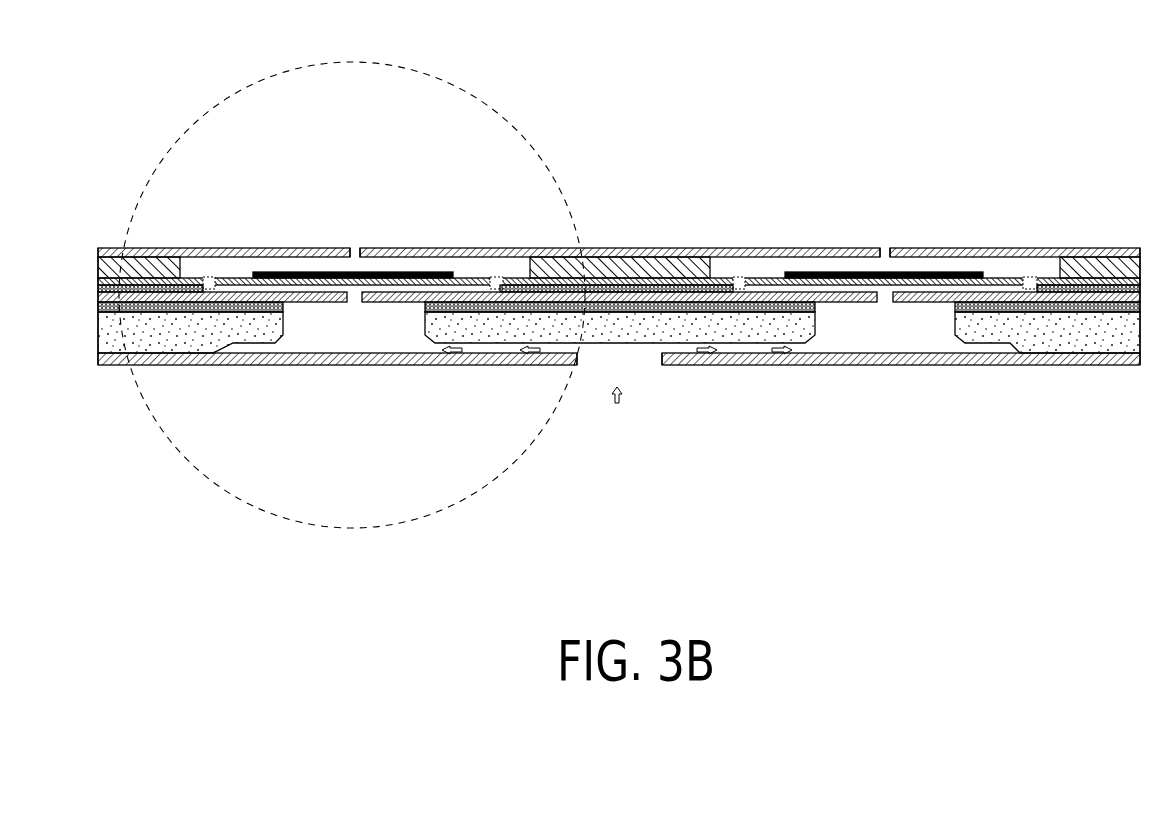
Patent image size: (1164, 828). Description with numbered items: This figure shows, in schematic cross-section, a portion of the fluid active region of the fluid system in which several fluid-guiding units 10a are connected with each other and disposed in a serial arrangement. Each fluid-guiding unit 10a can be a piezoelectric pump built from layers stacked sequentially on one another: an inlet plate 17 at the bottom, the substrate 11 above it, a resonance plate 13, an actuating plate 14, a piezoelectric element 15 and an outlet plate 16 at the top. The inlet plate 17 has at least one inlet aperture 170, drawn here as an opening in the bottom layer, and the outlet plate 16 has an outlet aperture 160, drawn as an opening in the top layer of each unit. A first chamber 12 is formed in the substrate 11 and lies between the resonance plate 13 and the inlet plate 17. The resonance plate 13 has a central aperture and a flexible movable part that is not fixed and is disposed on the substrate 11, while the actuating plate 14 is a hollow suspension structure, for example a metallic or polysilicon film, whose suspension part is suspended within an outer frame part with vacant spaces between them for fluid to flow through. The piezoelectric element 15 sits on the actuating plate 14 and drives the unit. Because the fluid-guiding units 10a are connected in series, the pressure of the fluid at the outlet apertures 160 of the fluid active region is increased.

The fluid-guiding unit 10a is at (510, 122).
The substrate 11 is at (238, 327).
The first chamber 12 is at (367, 327).
The resonance plate 13 is at (493, 303).
The actuating plate 14 is at (408, 278).
The piezoelectric element 15 is at (325, 276).
The outlet plate 16 is at (834, 257).
The inlet plate 17 is at (170, 316).
The outlet aperture 160 is at (352, 248).
The inlet aperture 170 is at (660, 396).